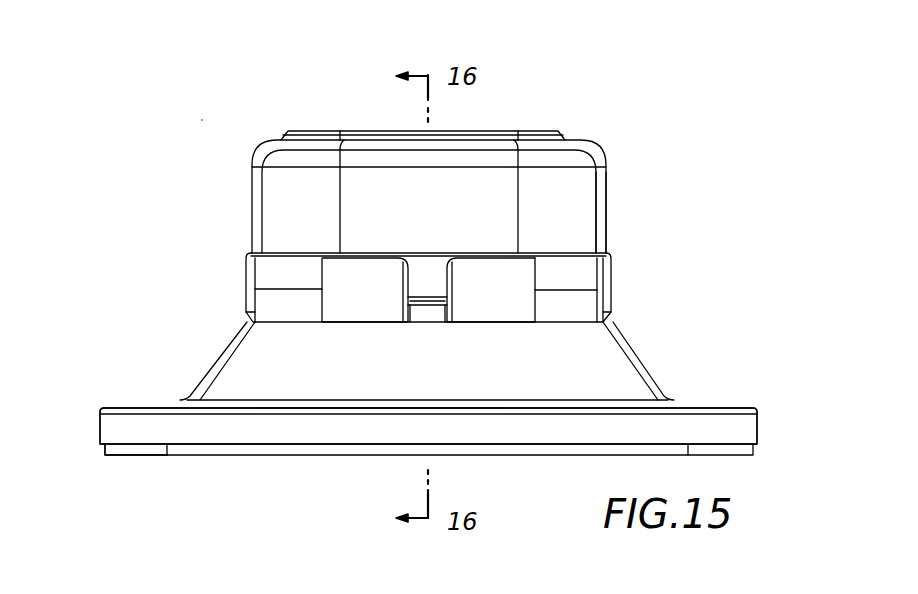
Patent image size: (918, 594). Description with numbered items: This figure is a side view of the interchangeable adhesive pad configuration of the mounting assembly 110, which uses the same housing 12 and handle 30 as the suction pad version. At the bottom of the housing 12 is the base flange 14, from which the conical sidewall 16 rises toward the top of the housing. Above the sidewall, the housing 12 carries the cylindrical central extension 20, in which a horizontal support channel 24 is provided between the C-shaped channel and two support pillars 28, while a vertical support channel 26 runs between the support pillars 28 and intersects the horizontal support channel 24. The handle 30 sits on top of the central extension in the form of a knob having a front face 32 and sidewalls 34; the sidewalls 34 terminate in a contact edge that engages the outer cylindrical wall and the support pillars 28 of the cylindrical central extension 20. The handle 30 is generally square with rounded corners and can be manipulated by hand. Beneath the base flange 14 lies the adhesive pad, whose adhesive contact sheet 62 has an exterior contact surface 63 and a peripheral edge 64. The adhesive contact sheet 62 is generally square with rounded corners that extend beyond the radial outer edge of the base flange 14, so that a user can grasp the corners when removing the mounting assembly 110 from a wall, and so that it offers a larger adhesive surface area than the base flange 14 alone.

The mounting assembly 110 is at (202, 120).
The housing 12 is at (171, 414).
The base flange 14 is at (752, 428).
The conical sidewall 16 is at (625, 370).
The cylindrical central extension 20 is at (606, 300).
The horizontal support channel 24 is at (288, 272).
The vertical support channel 26 is at (432, 318).
The support pillars 28 is at (370, 300).
The handle 30 is at (580, 151).
The front face 32 is at (525, 134).
The sidewalls 34 is at (606, 196).
The adhesive contact sheet 62 is at (226, 455).
The exterior contact surface 63 is at (178, 456).
The peripheral edge 64 is at (104, 450).